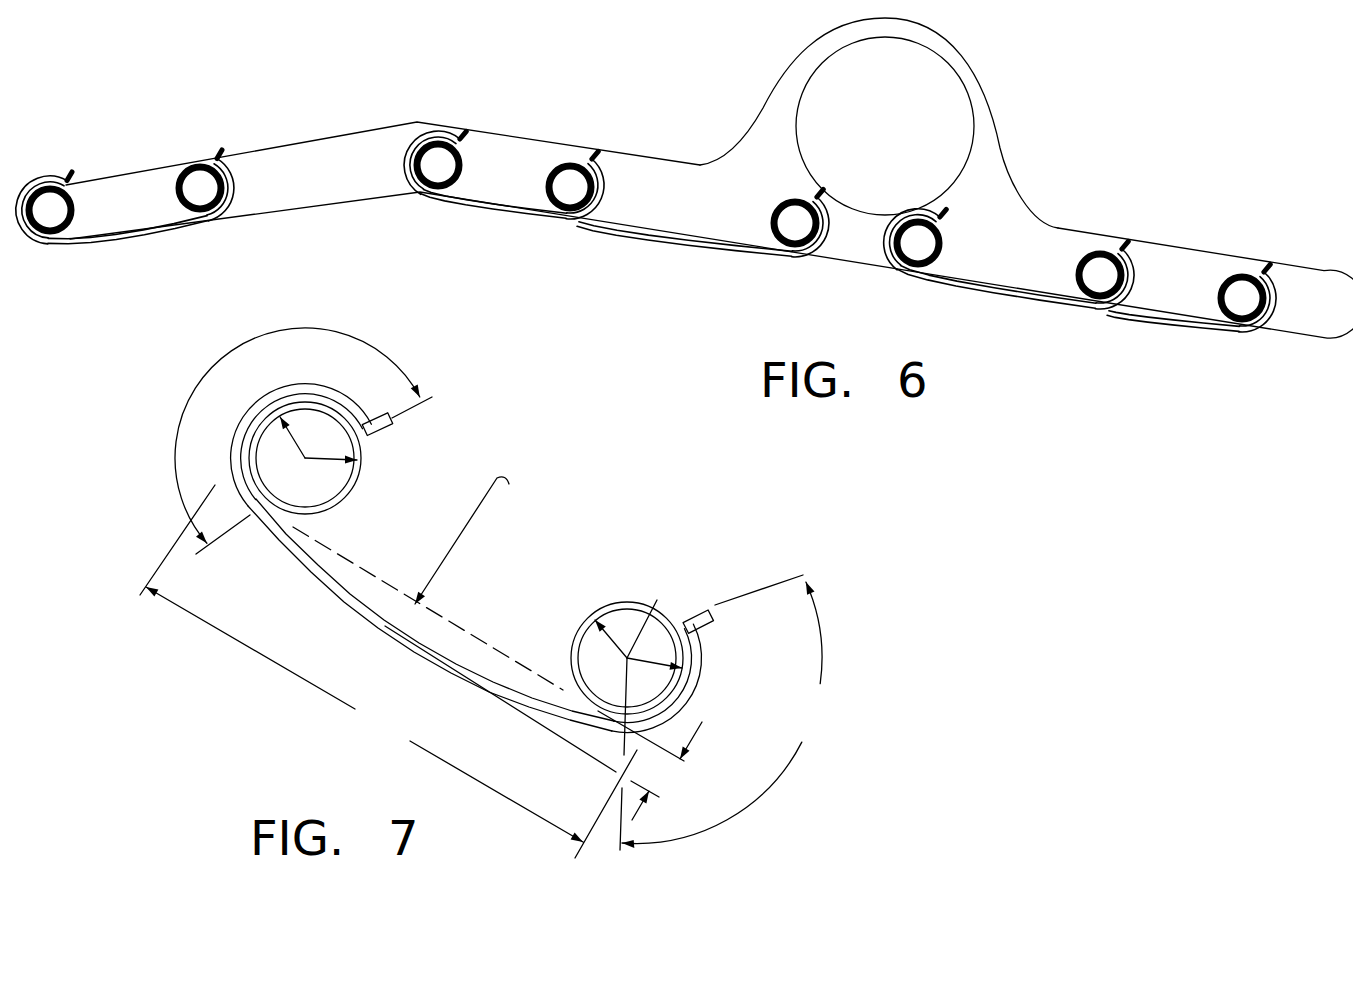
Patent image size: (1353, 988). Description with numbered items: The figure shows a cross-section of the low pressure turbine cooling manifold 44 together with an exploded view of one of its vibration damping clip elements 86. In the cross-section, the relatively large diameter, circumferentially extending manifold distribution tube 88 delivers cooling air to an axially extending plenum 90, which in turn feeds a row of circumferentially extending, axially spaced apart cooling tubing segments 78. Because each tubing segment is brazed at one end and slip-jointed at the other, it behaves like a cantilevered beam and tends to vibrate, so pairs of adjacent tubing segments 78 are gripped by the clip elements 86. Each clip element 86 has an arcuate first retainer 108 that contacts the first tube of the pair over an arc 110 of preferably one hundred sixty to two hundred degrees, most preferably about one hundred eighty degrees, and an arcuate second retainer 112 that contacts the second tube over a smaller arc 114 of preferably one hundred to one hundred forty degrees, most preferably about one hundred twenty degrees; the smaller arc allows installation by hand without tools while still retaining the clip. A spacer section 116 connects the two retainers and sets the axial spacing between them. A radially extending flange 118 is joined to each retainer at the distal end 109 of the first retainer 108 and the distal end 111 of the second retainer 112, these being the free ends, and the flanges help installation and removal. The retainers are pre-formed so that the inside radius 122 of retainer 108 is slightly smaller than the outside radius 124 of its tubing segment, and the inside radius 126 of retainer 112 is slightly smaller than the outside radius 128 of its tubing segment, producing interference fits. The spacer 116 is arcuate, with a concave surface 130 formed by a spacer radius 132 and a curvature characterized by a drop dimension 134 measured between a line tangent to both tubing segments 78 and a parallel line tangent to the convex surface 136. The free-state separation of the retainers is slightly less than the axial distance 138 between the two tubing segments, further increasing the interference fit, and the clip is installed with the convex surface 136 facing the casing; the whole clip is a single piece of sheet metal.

In FIG. 6, the manifold 44 is at (1005, 162).
In FIG. 6, the tubing segments 78 is at (177, 206).
In FIG. 7, the tubing segments 78 is at (369, 473).
In FIG. 6, the clip elements 86 is at (112, 246).
In FIG. 7, the clip elements 86 is at (499, 563).
In FIG. 6, the manifold distribution tube 88 is at (858, 132).
In FIG. 6, the plenum 90 is at (726, 150).
In FIG. 7, the first retainer 108 is at (316, 385).
In FIG. 7, the distal end of retainer 108 109 is at (393, 430).
In FIG. 7, the arc 110 is at (297, 441).
In FIG. 7, the distal end of retainer 112 111 is at (695, 606).
In FIG. 7, the second retainer 112 is at (702, 658).
In FIG. 7, the arc 114 is at (724, 716).
In FIG. 7, the spacer section 116 is at (288, 560).
In FIG. 7, the flange 118 is at (391, 411).
In FIG. 7, the inside radius of retainer 108 122 is at (290, 440).
In FIG. 7, the outside radius of tubing segment 124 is at (333, 466).
In FIG. 7, the inside radius of retainer 112 126 is at (657, 601).
In FIG. 7, the outside radius of tubing segment 128 is at (612, 638).
In FIG. 7, the concave surface 130 is at (423, 630).
In FIG. 7, the spacer radius 132 is at (468, 521).
In FIG. 7, the drop dimension 134 is at (703, 728).
In FIG. 7, the convex surface 136 is at (415, 655).
In FIG. 7, the axial distance 138 is at (388, 671).